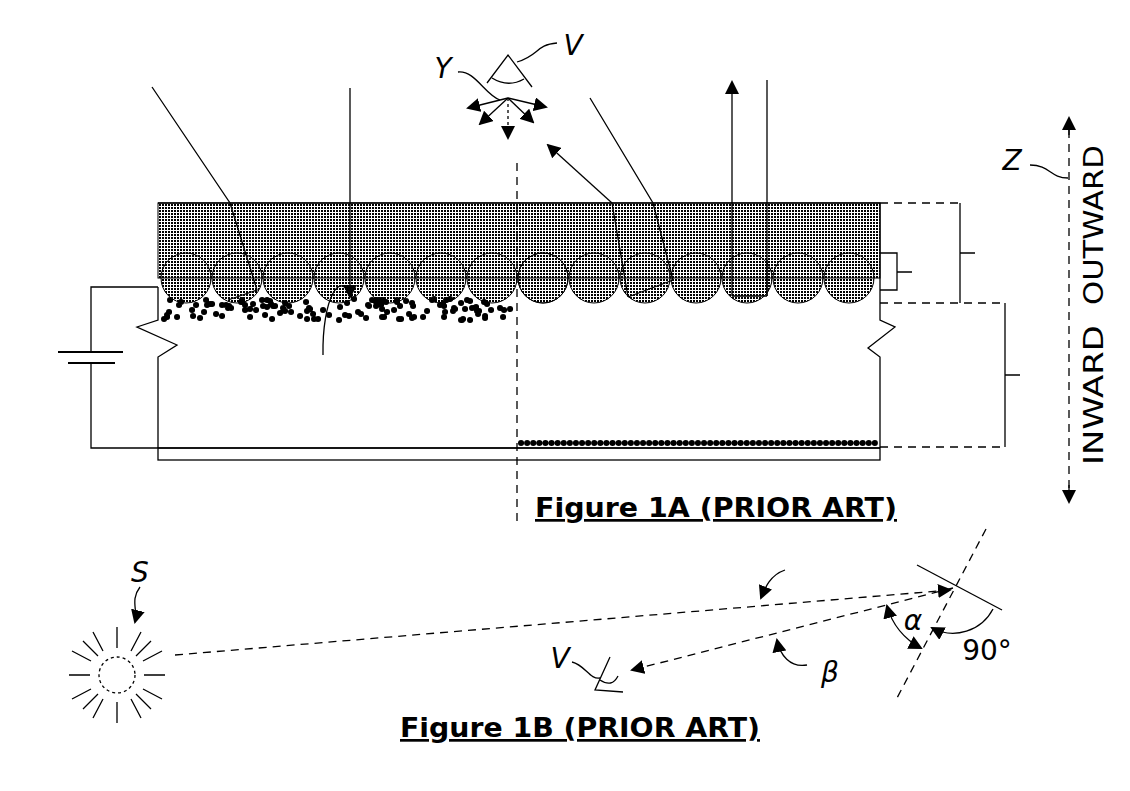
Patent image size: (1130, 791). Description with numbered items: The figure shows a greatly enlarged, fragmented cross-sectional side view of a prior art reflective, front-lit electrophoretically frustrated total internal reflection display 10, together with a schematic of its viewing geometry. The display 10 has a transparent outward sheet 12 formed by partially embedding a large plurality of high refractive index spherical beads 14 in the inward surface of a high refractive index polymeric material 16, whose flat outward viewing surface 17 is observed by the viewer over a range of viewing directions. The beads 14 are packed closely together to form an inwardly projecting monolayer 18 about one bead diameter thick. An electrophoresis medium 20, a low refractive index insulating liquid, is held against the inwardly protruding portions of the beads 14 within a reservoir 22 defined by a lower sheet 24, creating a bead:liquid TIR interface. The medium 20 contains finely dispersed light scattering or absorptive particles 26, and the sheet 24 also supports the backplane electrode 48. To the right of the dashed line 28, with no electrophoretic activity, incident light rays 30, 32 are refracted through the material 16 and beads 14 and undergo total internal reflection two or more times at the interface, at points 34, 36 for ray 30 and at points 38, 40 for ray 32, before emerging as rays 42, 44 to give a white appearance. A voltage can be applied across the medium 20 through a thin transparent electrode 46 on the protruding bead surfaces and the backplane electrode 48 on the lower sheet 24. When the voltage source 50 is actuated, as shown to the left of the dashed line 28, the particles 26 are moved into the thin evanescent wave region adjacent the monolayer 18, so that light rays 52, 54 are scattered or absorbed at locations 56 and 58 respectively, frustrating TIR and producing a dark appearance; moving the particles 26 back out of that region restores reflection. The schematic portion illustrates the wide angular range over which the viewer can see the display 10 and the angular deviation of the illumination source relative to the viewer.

In FIG. 1A, the display 10 is at (868, 192).
In FIG. 1B, the display 10 is at (928, 565).
In FIG. 1A, the transparent outward sheet 12 is at (945, 253).
In FIG. 1A, the beads 14 is at (850, 272).
In FIG. 1A, the polymeric material 16 is at (423, 220).
In FIG. 1A, the outward viewing surface 17 is at (305, 202).
In FIG. 1A, the monolayer 18 is at (559, 278).
In FIG. 1A, the electrophoresis medium 20 is at (576, 402).
In FIG. 1A, the reservoir 22 is at (970, 375).
In FIG. 1A, the lower sheet 24 is at (305, 462).
In FIG. 1A, the particles 26 is at (450, 317).
In FIG. 1A, the dashed line 28 is at (517, 478).
In FIG. 1A, the incident light ray 30 is at (767, 113).
In FIG. 1A, the incident light ray 32 is at (622, 145).
In FIG. 1A, the TIR point 34 is at (768, 297).
In FIG. 1A, the TIR point 36 is at (732, 298).
In FIG. 1A, the TIR point 38 is at (673, 280).
In FIG. 1A, the TIR point 40 is at (628, 297).
In FIG. 1A, the emerging ray 42 is at (728, 123).
In FIG. 1A, the emerging ray 44 is at (575, 167).
In FIG. 1A, the electrode 46 is at (547, 305).
In FIG. 1A, the backplane electrode 48 is at (292, 446).
In FIG. 1A, the voltage source 50 is at (80, 352).
In FIG. 1A, the light ray 52 is at (352, 108).
In FIG. 1A, the light ray 54 is at (168, 108).
In FIG. 1A, the scattering/absorption point 56 is at (332, 341).
In FIG. 1A, the scattering/absorption point 58 is at (203, 325).